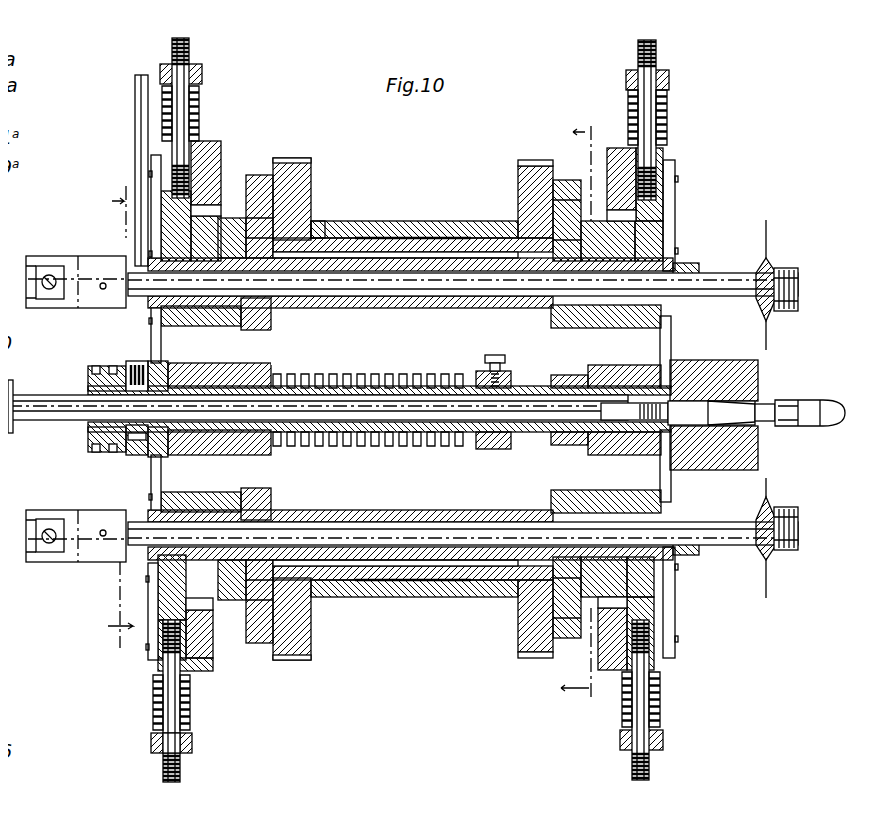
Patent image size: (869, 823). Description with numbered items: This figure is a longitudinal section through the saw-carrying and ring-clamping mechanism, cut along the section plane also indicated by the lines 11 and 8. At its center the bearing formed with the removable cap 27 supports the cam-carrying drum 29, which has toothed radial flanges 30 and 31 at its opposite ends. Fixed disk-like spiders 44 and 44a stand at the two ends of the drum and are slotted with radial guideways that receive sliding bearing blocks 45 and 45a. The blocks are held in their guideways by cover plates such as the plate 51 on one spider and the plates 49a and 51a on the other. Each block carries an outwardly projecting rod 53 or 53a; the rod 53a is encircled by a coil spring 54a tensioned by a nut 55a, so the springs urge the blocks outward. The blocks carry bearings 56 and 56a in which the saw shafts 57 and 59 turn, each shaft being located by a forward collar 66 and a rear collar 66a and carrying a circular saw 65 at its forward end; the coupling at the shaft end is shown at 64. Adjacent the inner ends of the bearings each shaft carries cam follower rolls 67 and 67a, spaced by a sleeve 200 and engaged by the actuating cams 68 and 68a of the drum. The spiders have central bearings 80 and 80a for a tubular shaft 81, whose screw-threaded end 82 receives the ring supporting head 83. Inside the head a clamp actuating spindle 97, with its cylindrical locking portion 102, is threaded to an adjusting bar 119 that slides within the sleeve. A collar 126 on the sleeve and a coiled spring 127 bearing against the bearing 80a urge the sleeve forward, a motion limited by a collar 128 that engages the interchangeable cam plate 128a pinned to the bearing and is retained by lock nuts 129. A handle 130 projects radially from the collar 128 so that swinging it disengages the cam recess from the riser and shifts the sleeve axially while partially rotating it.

The handle 130 is at (129, 112).
The section line 11 is at (105, 417).
The shaft coupling 64 is at (54, 248).
The sliding bearing block 45 is at (643, 227).
The spider member 44a is at (213, 190).
The sliding bearing block 45a is at (232, 190).
The radial flange 30 is at (308, 158).
The cam-carrying drum 29 is at (333, 221).
The removable cap 27 is at (403, 214).
The actuating cam 68a is at (307, 177).
The bearing 56 is at (663, 248).
The radial flange 31 is at (510, 167).
The actuating cam 68 is at (510, 233).
The spider member 44 is at (598, 160).
The section line 8 is at (596, 128).
The cover plate 51 is at (618, 140).
The rod 53 is at (642, 130).
The collar 66 is at (690, 258).
The saw shaft 57 is at (387, 282).
The saw shaft 59 is at (390, 520).
The circular saw 65 is at (760, 240).
The cam follower roll 67a is at (330, 302).
The bearing 56a is at (187, 300).
The collar 66a is at (153, 317).
The lock nut 129 is at (85, 357).
The collar 128 is at (118, 442).
The interchangeable cam plate 128a is at (148, 447).
The central bearing member 80a is at (187, 360).
The sleeve 200 is at (425, 302).
The adjusting bar 119 is at (423, 393).
The cam follower roll 67 is at (543, 312).
The coiled spring 127 is at (393, 430).
The collar 126 is at (488, 437).
The tubular shaft 81 is at (515, 380).
The central bearing member 80 is at (627, 360).
The ring supporting head 83 is at (753, 360).
The screw-threaded end 82 is at (676, 423).
The clamp actuating spindle 97 is at (690, 390).
The cylindrical locking portion 102 is at (800, 393).
The cover plate 49a is at (141, 613).
The cover plate 51a is at (190, 667).
The coil spring 54a is at (180, 703).
The nut 55a is at (147, 733).
The rod 53a is at (198, 768).